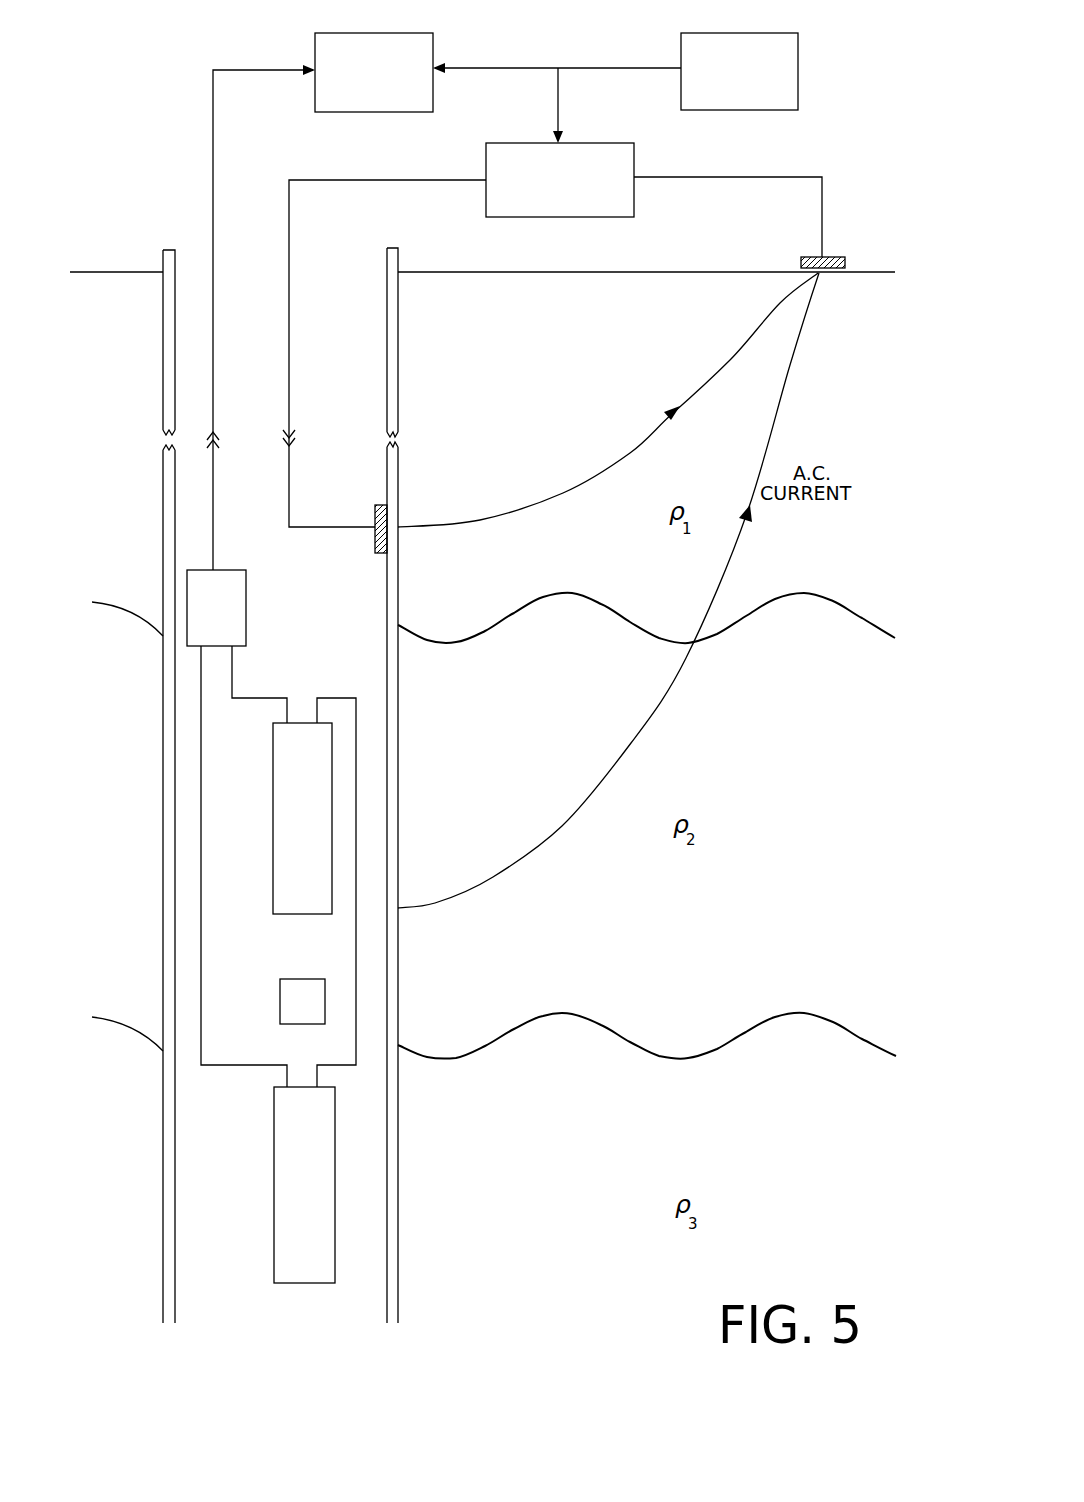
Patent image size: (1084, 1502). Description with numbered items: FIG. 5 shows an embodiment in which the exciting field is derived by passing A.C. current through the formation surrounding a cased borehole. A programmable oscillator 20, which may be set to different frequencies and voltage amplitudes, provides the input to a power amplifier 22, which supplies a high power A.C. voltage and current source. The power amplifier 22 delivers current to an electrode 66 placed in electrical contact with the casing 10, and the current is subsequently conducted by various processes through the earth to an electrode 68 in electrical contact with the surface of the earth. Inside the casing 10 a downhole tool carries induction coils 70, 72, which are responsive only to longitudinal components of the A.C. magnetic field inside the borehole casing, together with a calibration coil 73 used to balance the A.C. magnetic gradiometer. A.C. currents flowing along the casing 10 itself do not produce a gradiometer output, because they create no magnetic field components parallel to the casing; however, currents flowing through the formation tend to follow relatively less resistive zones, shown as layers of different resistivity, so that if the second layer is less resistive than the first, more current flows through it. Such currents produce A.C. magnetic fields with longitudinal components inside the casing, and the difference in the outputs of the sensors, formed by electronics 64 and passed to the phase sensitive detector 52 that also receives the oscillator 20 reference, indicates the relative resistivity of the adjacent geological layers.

The borehole casing / pipe 10 is at (398, 250).
The programmable oscillator 20 is at (728, 32).
The power amplifier 22 is at (587, 218).
The phase sensitive detector 52 is at (372, 32).
The electronics 64 is at (246, 583).
The electrode 66 is at (375, 509).
The electrode 68 is at (825, 257).
The induction coil 70 is at (273, 898).
The induction coil 72 is at (274, 1265).
The calibration coil 73 is at (280, 1005).